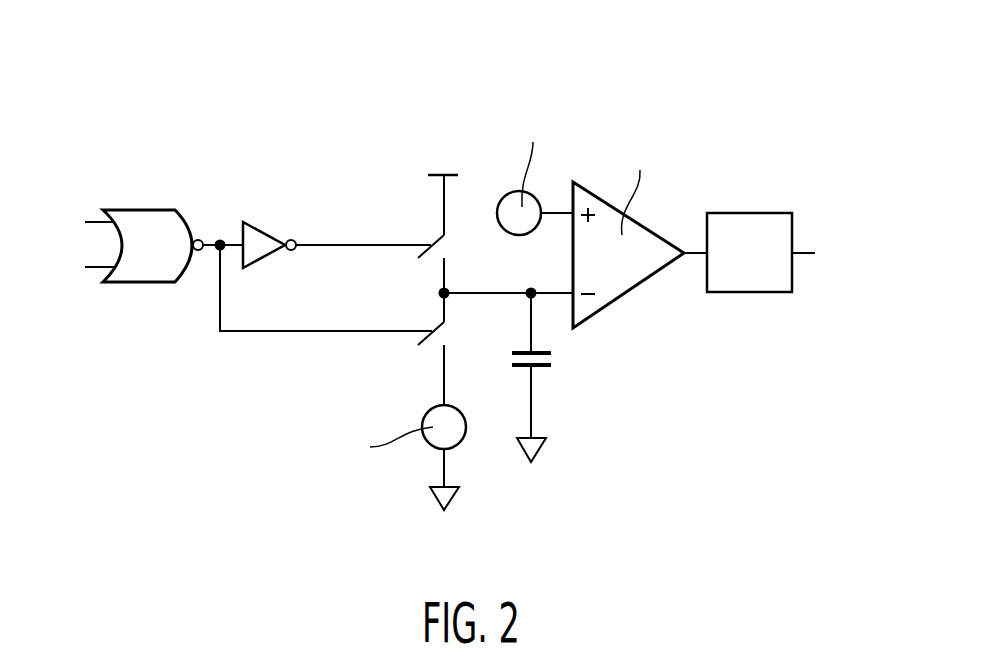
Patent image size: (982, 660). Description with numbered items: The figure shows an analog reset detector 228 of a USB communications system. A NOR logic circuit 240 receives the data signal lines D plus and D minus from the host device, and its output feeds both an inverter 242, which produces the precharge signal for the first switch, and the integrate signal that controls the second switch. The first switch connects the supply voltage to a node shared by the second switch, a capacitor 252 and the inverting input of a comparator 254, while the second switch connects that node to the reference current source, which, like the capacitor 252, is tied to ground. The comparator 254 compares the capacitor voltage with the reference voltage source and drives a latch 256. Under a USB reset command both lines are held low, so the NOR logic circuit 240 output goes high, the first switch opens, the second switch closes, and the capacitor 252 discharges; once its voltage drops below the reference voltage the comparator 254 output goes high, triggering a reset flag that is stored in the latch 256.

The analog reset detector 228 is at (467, 53).
The NOR logic circuit 240 is at (135, 210).
The inverter 242 is at (267, 222).
The capacitor 252 is at (542, 368).
The comparator 254 is at (628, 297).
The latch 256 is at (772, 213).